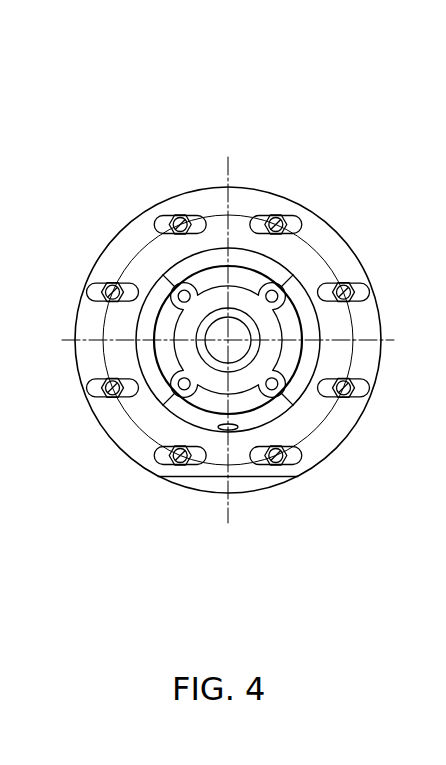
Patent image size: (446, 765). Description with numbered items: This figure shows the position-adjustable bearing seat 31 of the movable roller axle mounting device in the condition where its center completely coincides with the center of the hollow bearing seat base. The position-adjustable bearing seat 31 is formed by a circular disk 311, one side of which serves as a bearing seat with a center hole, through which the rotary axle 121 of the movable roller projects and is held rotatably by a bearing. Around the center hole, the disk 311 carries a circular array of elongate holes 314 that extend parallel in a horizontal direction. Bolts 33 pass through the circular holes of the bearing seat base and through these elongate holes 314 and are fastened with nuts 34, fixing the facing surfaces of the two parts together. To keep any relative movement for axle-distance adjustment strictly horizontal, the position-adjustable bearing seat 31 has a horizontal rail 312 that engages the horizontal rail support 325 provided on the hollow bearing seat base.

The position-adjustable bearing seat 31 is at (110, 217).
The disk 311 is at (332, 248).
The horizontal rail 312 is at (208, 478).
The elongate holes 314 is at (293, 218).
The bolts 33 is at (275, 218).
The nuts 34 is at (268, 221).
The rotary axle 121 is at (238, 350).
The horizontal rail support 325 is at (272, 485).